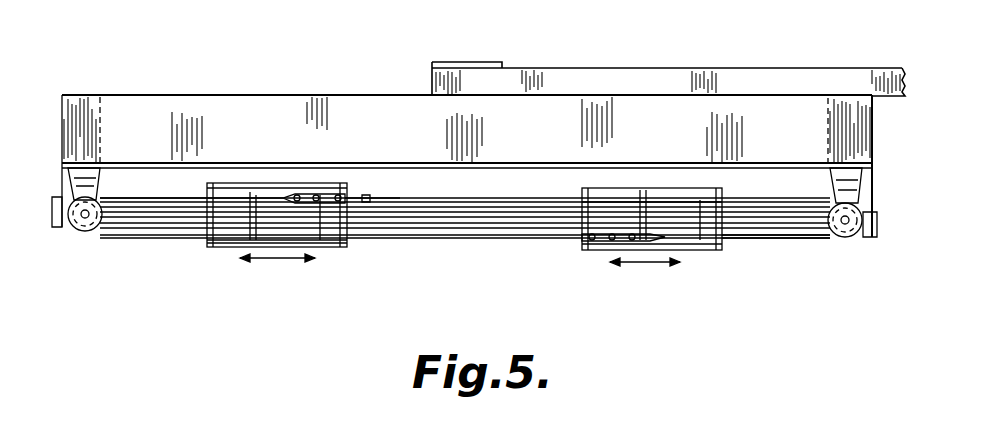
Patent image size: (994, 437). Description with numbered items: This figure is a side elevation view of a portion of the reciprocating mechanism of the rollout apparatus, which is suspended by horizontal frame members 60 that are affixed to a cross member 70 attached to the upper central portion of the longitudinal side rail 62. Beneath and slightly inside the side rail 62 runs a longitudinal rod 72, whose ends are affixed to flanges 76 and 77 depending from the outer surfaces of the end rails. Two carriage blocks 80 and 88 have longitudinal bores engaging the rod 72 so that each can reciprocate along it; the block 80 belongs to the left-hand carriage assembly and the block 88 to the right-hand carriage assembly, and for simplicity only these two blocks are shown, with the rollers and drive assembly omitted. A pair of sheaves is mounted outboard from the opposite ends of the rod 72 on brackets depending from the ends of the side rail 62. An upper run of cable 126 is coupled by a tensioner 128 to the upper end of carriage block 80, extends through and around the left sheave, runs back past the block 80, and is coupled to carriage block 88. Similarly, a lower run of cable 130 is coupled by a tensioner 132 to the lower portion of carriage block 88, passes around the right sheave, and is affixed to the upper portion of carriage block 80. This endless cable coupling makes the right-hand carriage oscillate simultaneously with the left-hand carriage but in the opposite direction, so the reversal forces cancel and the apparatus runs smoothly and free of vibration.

The horizontal frame members 60 is at (614, 77).
The side rail 62 is at (142, 103).
The cross member 70 is at (462, 62).
The rod 72 is at (165, 212).
The flange 76 is at (64, 96).
The flange 77 is at (868, 183).
The carriage block 80 is at (334, 247).
The carriage block 88 is at (703, 223).
The upper run of cable 126 is at (193, 197).
The tensioner 128 is at (338, 192).
The lower run of cable 130 is at (770, 240).
The tensioner 132 is at (596, 246).